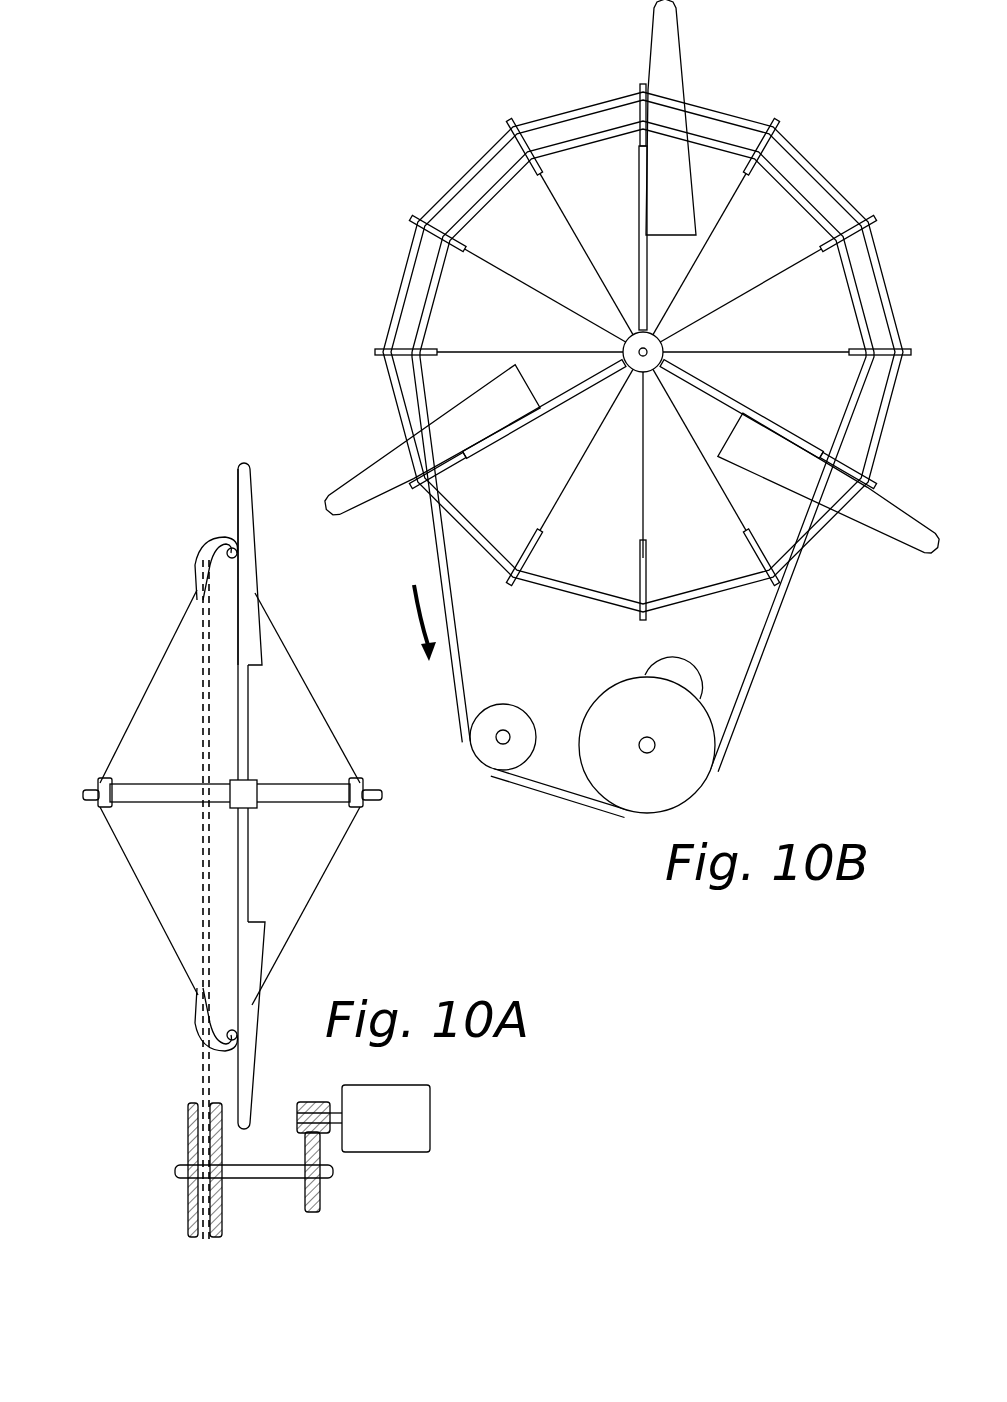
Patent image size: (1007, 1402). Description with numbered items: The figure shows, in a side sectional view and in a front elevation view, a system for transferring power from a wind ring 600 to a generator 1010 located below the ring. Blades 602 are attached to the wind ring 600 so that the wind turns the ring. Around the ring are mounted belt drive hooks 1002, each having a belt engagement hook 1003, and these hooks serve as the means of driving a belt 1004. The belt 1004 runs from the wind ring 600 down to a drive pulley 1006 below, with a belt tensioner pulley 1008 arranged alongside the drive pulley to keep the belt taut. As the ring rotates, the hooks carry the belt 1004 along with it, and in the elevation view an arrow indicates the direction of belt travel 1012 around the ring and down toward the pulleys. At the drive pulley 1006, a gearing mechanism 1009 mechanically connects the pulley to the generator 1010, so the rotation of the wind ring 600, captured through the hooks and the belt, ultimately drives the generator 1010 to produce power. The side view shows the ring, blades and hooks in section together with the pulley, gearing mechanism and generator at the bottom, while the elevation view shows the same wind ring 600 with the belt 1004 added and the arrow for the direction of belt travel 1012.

In FIG. 10B, the wind ring 600 is at (433, 146).
In FIG. 10A, the wind ring 600 is at (158, 550).
In FIG. 10B, the blade 602 is at (684, 80).
In FIG. 10A, the blade 602 is at (250, 510).
In FIG. 10B, the belt hook 1002 is at (545, 540).
In FIG. 10A, the belt hook 1002 is at (195, 583).
In FIG. 10A, the belt engagement hook 1003 is at (207, 536).
In FIG. 10B, the belt 1004 is at (762, 656).
In FIG. 10A, the belt 1004 is at (200, 698).
In FIG. 10B, the drive pulley 1006 is at (688, 760).
In FIG. 10A, the drive pulley 1006 is at (188, 1198).
In FIG. 10B, the belt tensioner pulley 1008 is at (502, 758).
In FIG. 10A, the gearing mechanism 1009 is at (345, 1190).
In FIG. 10B, the generator 1010 is at (660, 670).
In FIG. 10A, the generator 1010 is at (405, 1130).
In FIG. 10B, the direction of belt travel 1012 is at (412, 603).